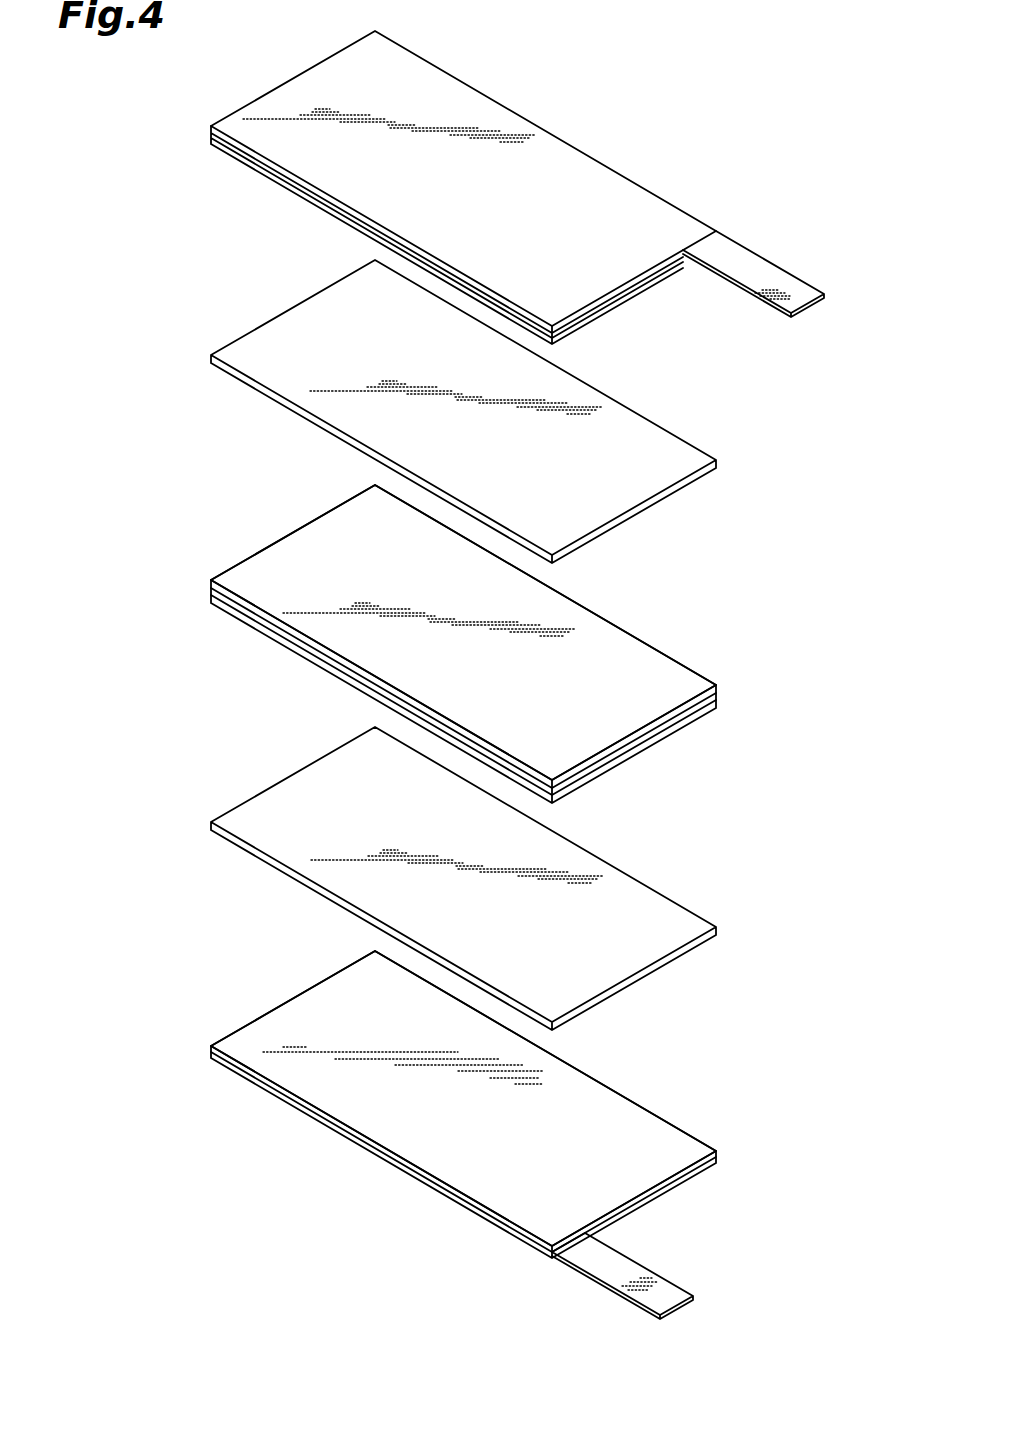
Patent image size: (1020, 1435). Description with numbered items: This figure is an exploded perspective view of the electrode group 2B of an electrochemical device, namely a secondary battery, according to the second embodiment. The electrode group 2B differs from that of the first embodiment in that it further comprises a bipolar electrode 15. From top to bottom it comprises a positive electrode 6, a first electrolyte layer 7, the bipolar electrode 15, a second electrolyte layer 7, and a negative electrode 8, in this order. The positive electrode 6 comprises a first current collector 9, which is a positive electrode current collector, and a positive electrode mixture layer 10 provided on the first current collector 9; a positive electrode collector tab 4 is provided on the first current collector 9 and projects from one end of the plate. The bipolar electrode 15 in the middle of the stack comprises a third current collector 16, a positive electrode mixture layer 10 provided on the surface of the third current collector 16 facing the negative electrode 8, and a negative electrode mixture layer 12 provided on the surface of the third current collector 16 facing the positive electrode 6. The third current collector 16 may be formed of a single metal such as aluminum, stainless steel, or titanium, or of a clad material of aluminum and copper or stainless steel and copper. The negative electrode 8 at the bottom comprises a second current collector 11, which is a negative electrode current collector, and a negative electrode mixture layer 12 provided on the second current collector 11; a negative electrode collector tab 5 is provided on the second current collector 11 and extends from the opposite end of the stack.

The electrode group 2B is at (790, 113).
The positive electrode collector tab 4 is at (817, 296).
The negative electrode collector tab 5 is at (605, 1270).
The positive electrode 6 is at (693, 198).
The electrolyte layer 7 is at (688, 452).
The negative electrode 8 is at (728, 1100).
The first current collector 9 is at (430, 88).
The positive electrode mixture layer 10 is at (630, 290).
The second current collector 11 is at (675, 1190).
The negative electrode mixture layer 12 is at (693, 687).
The bipolar electrode 15 is at (690, 612).
The third current collector 16 is at (702, 717).